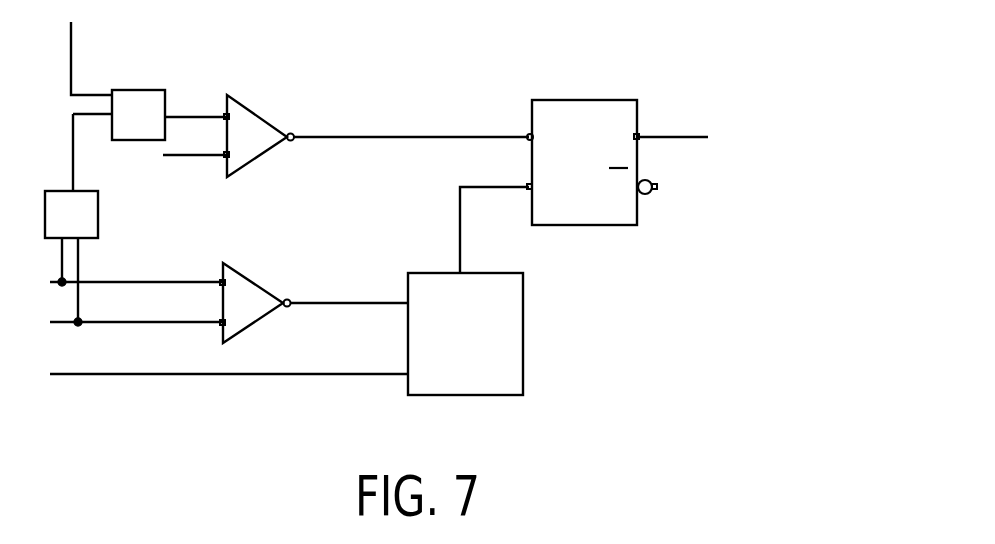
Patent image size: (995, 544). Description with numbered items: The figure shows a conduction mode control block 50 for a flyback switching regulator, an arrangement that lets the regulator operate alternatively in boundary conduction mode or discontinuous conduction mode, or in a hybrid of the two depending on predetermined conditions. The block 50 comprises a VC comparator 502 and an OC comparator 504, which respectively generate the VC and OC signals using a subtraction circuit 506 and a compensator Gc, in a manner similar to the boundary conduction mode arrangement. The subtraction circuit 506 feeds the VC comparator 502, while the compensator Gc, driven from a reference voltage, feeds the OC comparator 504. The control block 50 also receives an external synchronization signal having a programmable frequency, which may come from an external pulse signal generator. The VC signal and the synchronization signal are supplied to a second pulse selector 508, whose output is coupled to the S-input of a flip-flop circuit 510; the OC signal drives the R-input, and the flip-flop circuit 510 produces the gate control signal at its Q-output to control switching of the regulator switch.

The conduction mode control block 50 is at (538, 37).
The VC comparator 502 is at (265, 290).
The OC comparator 504 is at (252, 112).
The subtraction circuit 506 is at (98, 213).
The second pulse selector 508 is at (523, 345).
The flip-flop circuit 510 is at (615, 226).